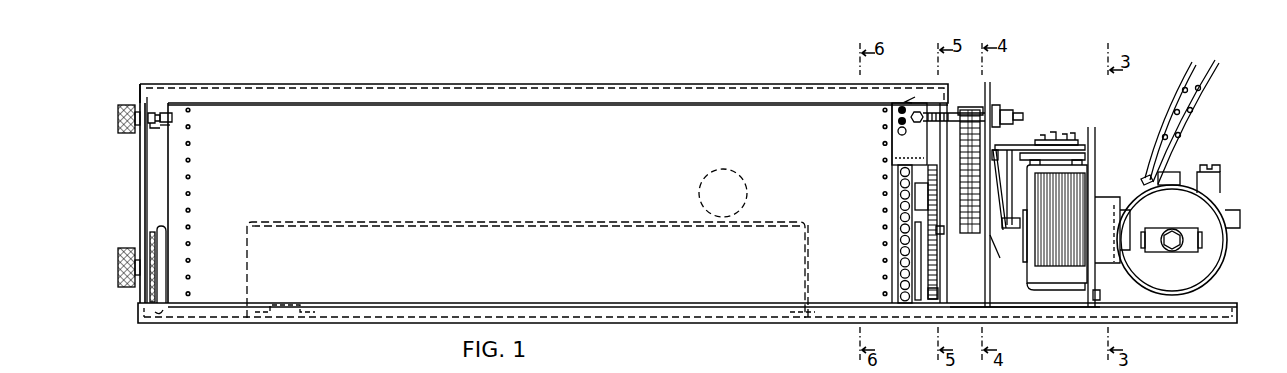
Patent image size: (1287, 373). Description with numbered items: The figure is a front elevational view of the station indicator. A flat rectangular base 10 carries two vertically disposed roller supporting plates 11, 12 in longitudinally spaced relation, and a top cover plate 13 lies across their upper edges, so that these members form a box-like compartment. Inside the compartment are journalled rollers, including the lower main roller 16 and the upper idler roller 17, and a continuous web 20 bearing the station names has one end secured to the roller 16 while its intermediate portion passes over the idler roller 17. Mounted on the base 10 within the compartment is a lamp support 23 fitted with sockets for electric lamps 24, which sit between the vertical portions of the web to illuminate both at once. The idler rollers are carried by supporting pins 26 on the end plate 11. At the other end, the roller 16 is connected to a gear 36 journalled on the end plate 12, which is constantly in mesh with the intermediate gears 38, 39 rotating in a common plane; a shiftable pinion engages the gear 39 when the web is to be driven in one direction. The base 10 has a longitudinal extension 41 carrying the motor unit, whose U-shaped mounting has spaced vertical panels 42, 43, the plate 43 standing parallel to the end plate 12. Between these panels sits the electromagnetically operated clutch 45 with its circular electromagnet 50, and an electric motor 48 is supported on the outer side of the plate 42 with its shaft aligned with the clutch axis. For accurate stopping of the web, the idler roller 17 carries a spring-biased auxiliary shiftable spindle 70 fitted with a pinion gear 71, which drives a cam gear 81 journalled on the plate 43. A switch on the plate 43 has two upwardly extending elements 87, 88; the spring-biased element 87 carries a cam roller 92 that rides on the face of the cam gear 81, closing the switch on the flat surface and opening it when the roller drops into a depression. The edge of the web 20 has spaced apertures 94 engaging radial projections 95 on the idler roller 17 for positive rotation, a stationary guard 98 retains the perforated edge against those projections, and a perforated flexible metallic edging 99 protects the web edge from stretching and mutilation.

The base 10 is at (291, 321).
The roller supporting plate 11 is at (143, 175).
The roller supporting plate 12 is at (948, 270).
The top cover plate 13 is at (487, 76).
The roller 16 is at (163, 275).
The idler roller 17 is at (164, 110).
The web 20 is at (235, 118).
The lamp support 23 is at (250, 220).
The electric lamps 24 is at (713, 170).
The supporting pins 26 is at (160, 128).
The gear 36 is at (940, 291).
The intermediate gear 38 is at (942, 232).
The intermediate gear 39 is at (933, 180).
The longitudinal extension 41 is at (1040, 322).
The vertical panel 42 is at (1096, 135).
The vertical panel 43 is at (991, 96).
The electromagnetically operated clutch 45 is at (1069, 136).
The electric motor 48 is at (1202, 208).
The electromagnet 50 is at (1073, 193).
The auxiliary shiftable spindle 70 is at (1018, 110).
The pinion gear 71 is at (968, 107).
The cam gear 81 is at (1000, 258).
The switch element 87 is at (1000, 173).
The switch element 88 is at (1010, 175).
The cam roller 92 is at (962, 196).
The apertures 94 is at (900, 250).
The radial projections 95 is at (890, 120).
The guard 98 is at (898, 147).
The flexible metallic edging 99 is at (900, 270).